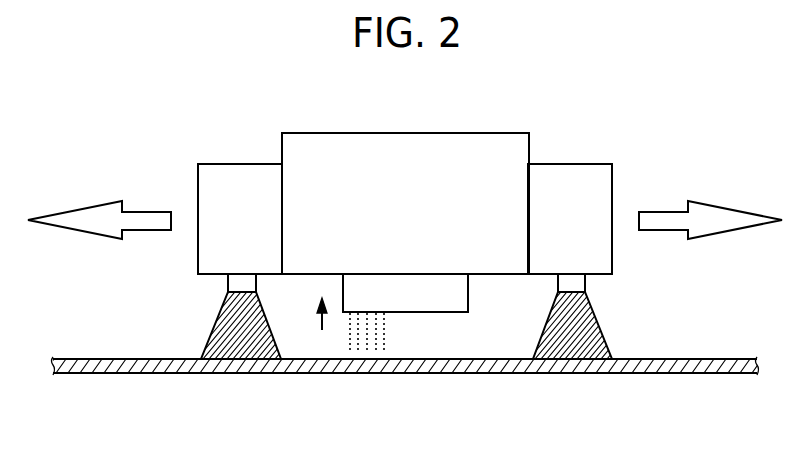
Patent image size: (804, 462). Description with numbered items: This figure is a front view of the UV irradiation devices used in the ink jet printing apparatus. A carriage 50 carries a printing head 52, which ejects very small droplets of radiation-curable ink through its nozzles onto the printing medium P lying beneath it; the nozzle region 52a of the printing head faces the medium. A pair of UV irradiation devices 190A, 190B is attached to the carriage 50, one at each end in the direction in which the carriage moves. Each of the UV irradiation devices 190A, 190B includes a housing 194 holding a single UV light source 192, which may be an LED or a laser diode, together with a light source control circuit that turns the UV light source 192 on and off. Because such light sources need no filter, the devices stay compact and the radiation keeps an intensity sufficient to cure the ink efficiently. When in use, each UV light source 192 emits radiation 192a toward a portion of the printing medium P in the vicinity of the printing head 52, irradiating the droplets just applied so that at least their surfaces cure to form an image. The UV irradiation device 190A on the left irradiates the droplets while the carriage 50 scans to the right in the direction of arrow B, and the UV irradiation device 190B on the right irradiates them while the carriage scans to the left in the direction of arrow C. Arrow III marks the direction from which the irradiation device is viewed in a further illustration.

The carriage 50 is at (455, 133).
The printing head 52 is at (413, 301).
The nozzle 52a is at (433, 312).
The UV irradiation device 190A is at (190, 191).
The UV irradiation device 190B is at (622, 191).
The UV light source 192 is at (256, 283).
The radiation 192a is at (243, 342).
The housing 194 is at (208, 163).
The printing medium P is at (700, 373).
The arrow B is at (741, 210).
The arrow C is at (70, 210).
The arrow III is at (323, 328).